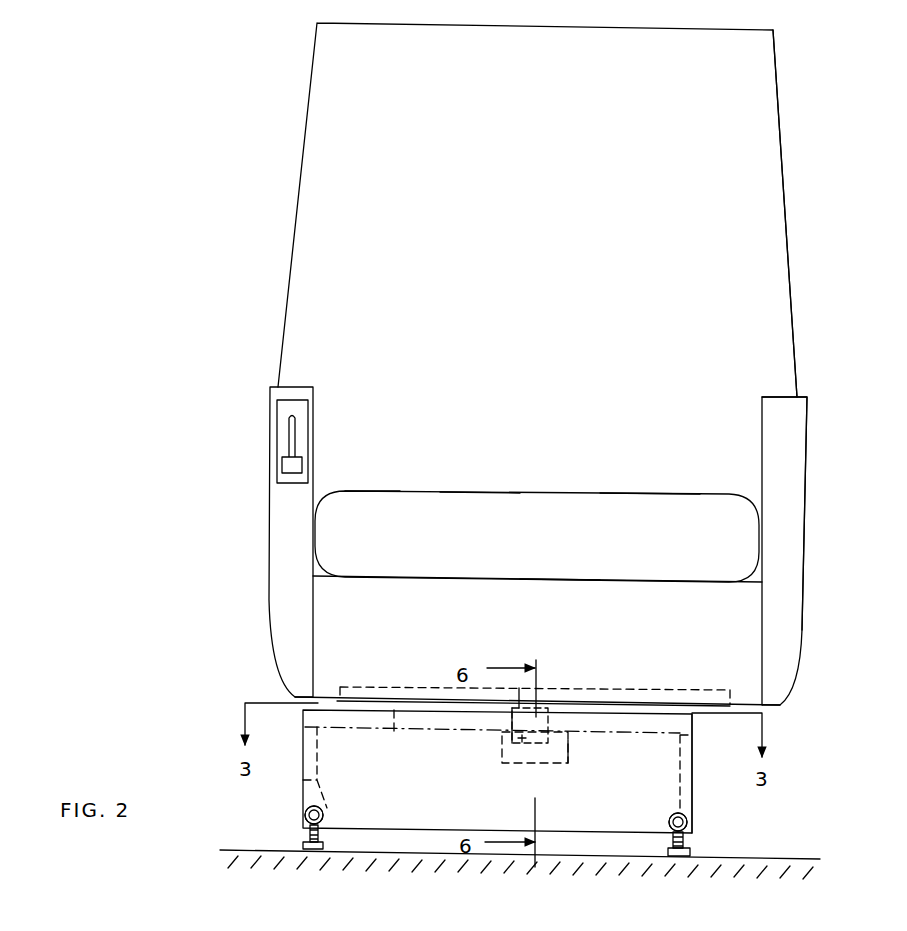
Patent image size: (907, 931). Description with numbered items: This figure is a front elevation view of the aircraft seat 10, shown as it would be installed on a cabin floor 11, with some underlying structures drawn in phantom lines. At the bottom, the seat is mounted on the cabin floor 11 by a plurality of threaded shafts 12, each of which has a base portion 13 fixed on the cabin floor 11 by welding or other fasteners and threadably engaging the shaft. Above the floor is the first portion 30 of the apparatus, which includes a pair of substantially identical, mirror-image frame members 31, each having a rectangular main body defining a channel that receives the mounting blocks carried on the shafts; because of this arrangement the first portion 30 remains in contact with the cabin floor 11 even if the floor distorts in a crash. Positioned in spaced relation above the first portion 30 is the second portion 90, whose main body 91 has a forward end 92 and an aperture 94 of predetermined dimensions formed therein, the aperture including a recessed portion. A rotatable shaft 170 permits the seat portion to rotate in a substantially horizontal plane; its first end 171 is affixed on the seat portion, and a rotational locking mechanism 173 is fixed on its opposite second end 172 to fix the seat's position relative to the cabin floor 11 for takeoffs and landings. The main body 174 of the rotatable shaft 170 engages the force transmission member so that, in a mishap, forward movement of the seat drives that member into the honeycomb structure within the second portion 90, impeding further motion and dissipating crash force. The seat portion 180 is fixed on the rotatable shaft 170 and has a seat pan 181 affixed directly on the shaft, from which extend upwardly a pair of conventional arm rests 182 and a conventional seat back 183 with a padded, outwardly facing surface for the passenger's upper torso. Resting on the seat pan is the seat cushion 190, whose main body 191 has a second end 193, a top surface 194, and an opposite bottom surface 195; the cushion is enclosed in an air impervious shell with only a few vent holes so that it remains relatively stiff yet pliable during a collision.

The seat 10 is at (808, 277).
The cabin floor 11 is at (770, 857).
The threaded shafts 12 is at (307, 838).
The base portion 13 is at (697, 850).
The first portion 30 is at (339, 819).
The frame members 31 is at (304, 815).
The second portion 90 is at (393, 743).
The main body 91 is at (653, 723).
The forward end 92 is at (335, 720).
The aperture 94 is at (437, 728).
The rotatable shaft 170 is at (563, 717).
The first end 171 is at (548, 708).
The second end 172 is at (502, 742).
The rotational locking mechanism 173 is at (587, 750).
The main body 174 is at (518, 716).
The seat portion 180 is at (276, 312).
The seat pan 181 is at (700, 688).
The arm rests 182 is at (315, 387).
The seat back 183 is at (737, 158).
The seat cushion 190 is at (543, 488).
The main body 191 is at (457, 503).
The second end 193 is at (388, 500).
The top surface 194 is at (610, 495).
The bottom surface 195 is at (560, 578).